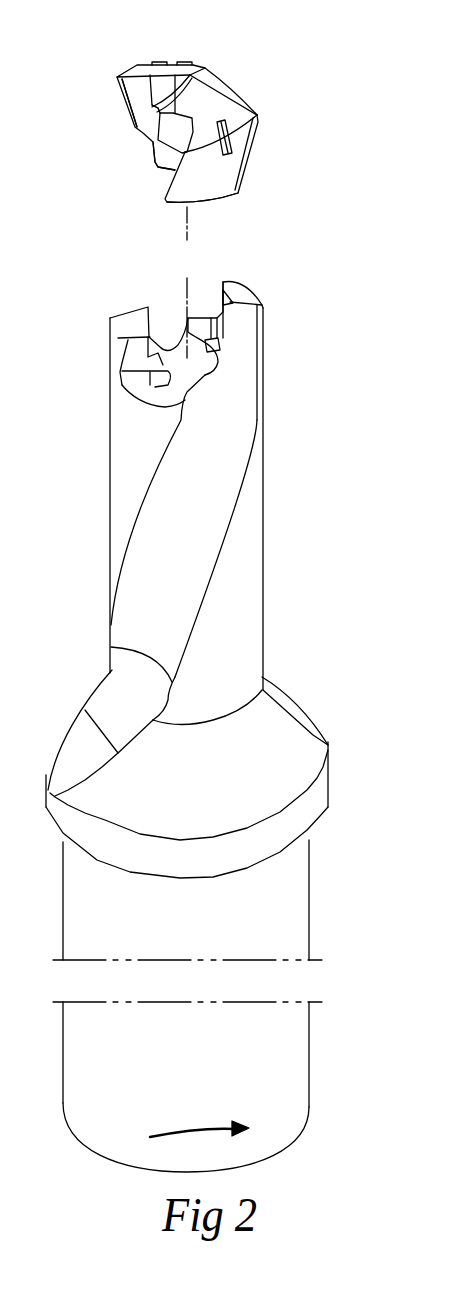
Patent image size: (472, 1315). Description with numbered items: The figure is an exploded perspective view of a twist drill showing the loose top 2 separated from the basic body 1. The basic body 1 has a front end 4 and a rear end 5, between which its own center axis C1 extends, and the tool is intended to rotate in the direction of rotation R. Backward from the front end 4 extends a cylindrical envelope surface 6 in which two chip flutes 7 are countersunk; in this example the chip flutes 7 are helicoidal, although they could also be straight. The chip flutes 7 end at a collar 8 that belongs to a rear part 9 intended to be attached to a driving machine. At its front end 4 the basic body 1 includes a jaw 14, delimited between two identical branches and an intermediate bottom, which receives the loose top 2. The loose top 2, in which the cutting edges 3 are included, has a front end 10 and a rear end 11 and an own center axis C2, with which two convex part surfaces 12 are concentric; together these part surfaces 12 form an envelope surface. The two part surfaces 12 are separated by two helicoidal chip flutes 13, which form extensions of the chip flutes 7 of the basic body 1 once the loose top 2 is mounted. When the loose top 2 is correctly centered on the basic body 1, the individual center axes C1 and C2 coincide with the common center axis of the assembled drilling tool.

The basic body 1 is at (187, 721).
The loose top 2 is at (275, 170).
The cutting edges 3 is at (138, 78).
The front end 4 is at (263, 287).
The rear end 5 is at (83, 1150).
The cylindrical envelope surface 6 is at (122, 440).
The chip flutes 7 is at (228, 442).
The collar 8 is at (58, 737).
The rear part 9 is at (287, 895).
The front end 10 is at (212, 60).
The rear end 11 is at (150, 165).
The convex part surfaces 12 is at (187, 188).
The helicoidal chip flutes 13 is at (140, 108).
The jaw 14 is at (202, 290).
The center axis of the basic body C1 is at (185, 282).
The center axis of the loose top C2 is at (190, 233).
The direction of rotation R is at (199, 1124).